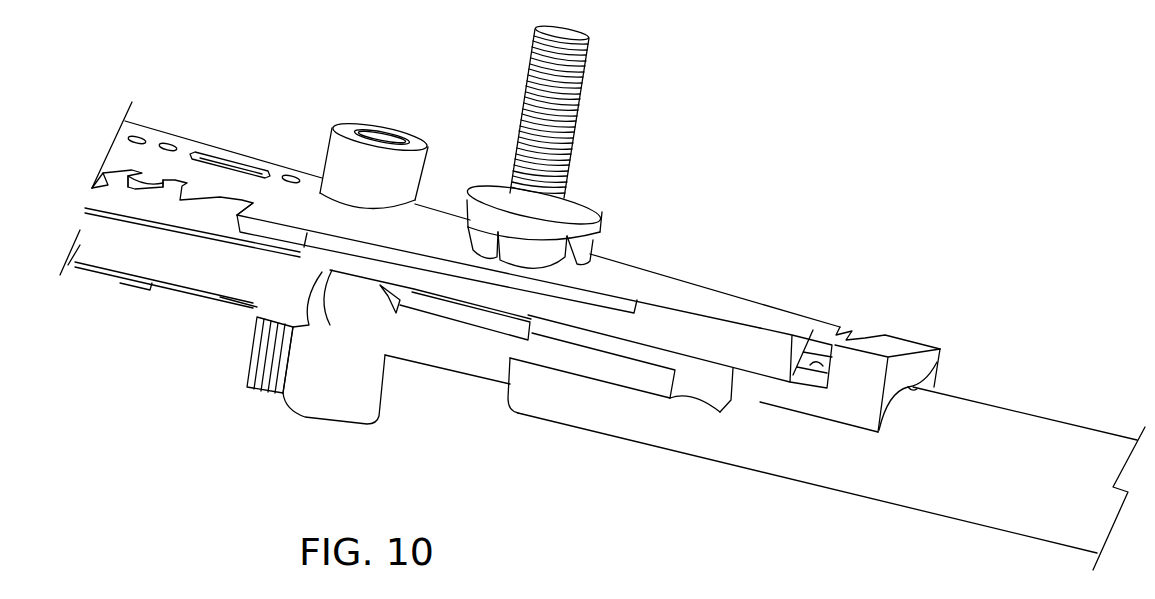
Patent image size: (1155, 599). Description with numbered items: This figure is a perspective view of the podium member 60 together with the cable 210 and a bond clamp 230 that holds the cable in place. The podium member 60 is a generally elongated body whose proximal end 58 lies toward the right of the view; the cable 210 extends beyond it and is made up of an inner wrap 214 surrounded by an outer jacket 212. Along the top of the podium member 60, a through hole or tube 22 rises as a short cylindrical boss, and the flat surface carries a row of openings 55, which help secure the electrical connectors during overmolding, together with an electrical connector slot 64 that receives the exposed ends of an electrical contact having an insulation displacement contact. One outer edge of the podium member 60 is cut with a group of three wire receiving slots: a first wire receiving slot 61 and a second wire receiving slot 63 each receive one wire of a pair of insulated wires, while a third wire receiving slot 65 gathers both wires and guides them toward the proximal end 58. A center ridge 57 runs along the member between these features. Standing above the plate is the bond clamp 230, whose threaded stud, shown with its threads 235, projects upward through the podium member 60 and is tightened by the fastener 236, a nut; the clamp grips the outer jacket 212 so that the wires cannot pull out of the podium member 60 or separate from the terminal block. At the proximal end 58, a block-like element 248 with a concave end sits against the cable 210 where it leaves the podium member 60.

The through holes or tubes 22 is at (385, 97).
The holes or openings 55 is at (170, 145).
The center ridge 57 is at (140, 283).
The proximal end 58 is at (778, 313).
The podium member 60 is at (893, 177).
The first wire receiving slot 61 is at (121, 191).
The second wire receiving slot 63 is at (167, 201).
The electrical connector slots 64 is at (237, 165).
The third wire receiving slot 65 is at (226, 218).
The cable 210 is at (806, 455).
The outer jacket 212 is at (933, 502).
The inner wrap 214 is at (460, 357).
The bond clamp 230 is at (585, 105).
The threads 235 is at (593, 62).
The fastener 236 is at (603, 222).
The block 248 is at (940, 365).